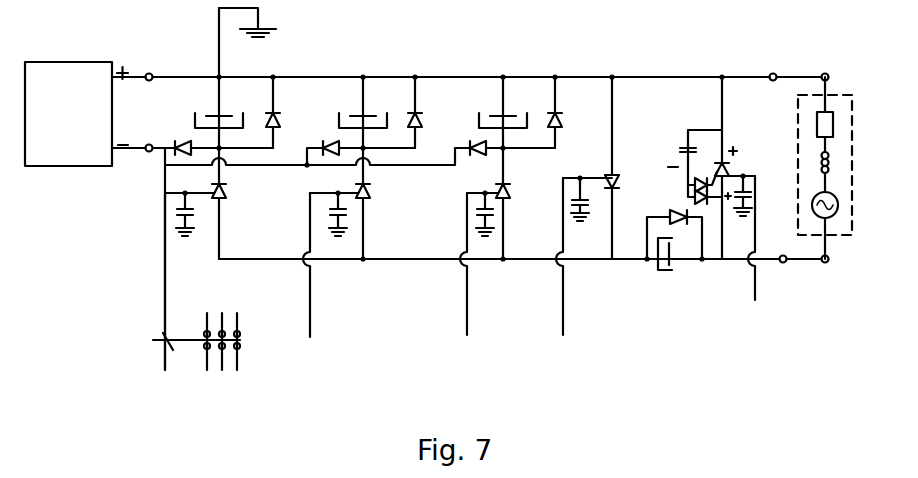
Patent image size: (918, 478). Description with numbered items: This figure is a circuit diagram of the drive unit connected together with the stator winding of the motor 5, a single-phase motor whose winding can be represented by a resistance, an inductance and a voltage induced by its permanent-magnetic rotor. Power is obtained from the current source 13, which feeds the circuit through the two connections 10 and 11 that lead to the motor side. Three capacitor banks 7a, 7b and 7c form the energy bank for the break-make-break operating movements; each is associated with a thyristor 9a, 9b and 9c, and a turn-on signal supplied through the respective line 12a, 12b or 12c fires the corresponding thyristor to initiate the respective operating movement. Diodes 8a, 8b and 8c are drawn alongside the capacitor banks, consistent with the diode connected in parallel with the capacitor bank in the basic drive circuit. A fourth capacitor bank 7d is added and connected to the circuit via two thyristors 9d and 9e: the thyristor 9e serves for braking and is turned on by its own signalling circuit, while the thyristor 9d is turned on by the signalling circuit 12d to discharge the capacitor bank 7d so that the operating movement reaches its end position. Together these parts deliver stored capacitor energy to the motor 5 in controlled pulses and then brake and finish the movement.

The motor 5 is at (845, 158).
The capacitor bank 7a is at (212, 115).
The capacitor bank 7b is at (356, 115).
The capacitor bank 7c is at (496, 115).
The fourth capacitor bank 7d is at (672, 262).
The diode 8a is at (275, 118).
The diode 8b is at (417, 118).
The diode 8c is at (557, 118).
The thyristor 9a is at (228, 190).
The thyristor 9b is at (372, 190).
The thyristor 9c is at (508, 186).
The thyristor 9d is at (615, 175).
The thyristor for braking 9e is at (727, 165).
The connection to the motor 10 is at (137, 152).
The connection to the motor 11 is at (135, 77).
The line 12a is at (167, 285).
The line 12b is at (312, 270).
The line 12c is at (470, 270).
The signalling circuit 12d is at (565, 270).
The current source 13 is at (70, 148).